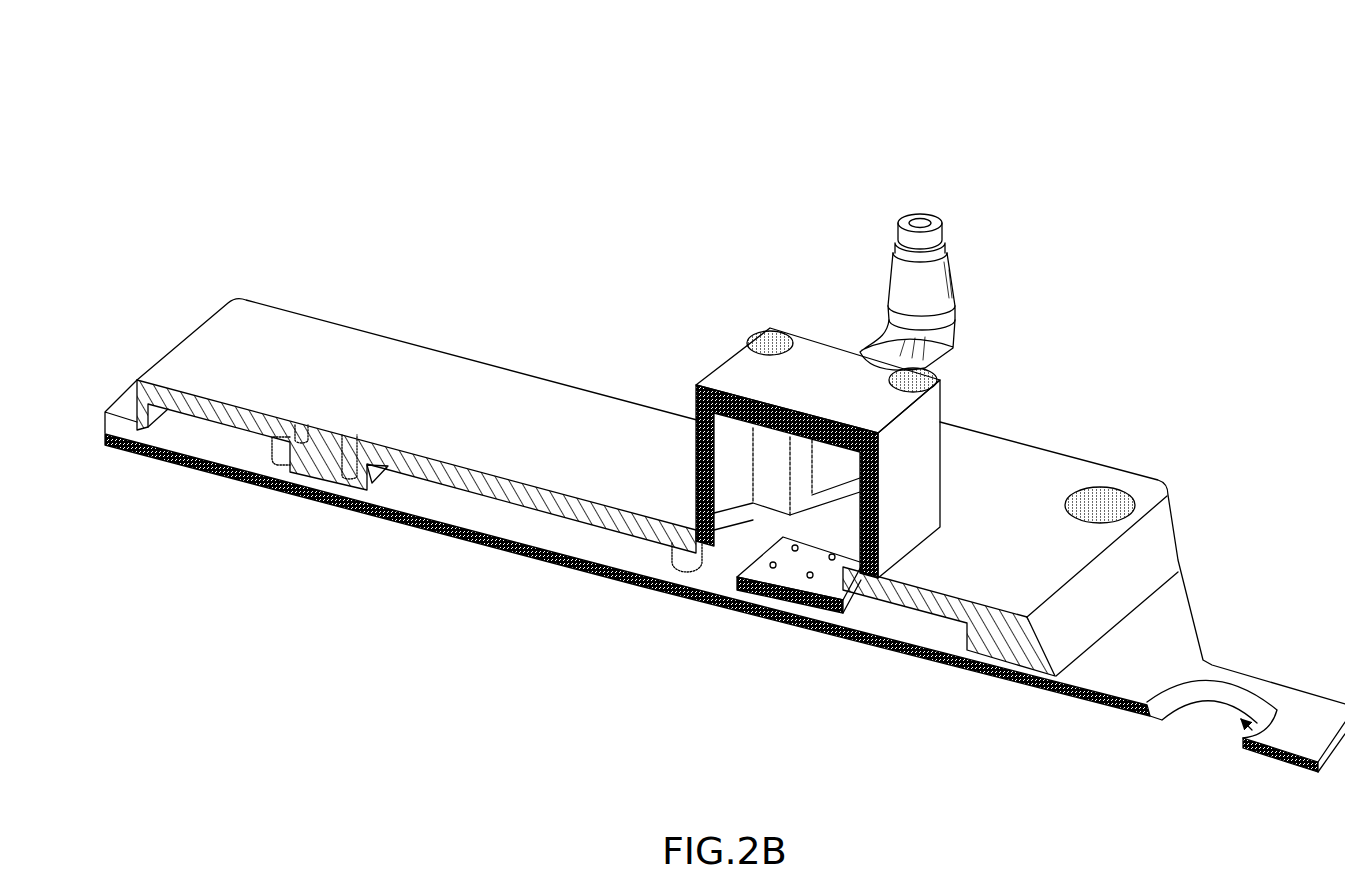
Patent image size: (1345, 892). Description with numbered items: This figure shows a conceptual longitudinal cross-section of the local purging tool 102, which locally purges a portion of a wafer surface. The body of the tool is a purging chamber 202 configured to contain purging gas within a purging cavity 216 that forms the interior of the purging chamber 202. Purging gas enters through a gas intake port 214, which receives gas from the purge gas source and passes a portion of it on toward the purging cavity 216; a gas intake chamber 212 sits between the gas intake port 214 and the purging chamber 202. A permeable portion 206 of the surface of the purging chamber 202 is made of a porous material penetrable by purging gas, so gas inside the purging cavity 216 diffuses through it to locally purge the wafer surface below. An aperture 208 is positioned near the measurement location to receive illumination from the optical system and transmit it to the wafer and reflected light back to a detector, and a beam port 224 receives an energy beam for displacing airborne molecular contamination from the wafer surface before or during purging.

The local purging tool 102 is at (213, 100).
The purging chamber 202 is at (275, 323).
The permeable portion 206 is at (468, 508).
The aperture 208 is at (1256, 730).
The gas intake chamber 212 is at (750, 367).
The gas intake port 214 is at (890, 238).
The purging cavity 216 is at (900, 626).
The beam port 224 is at (1112, 503).